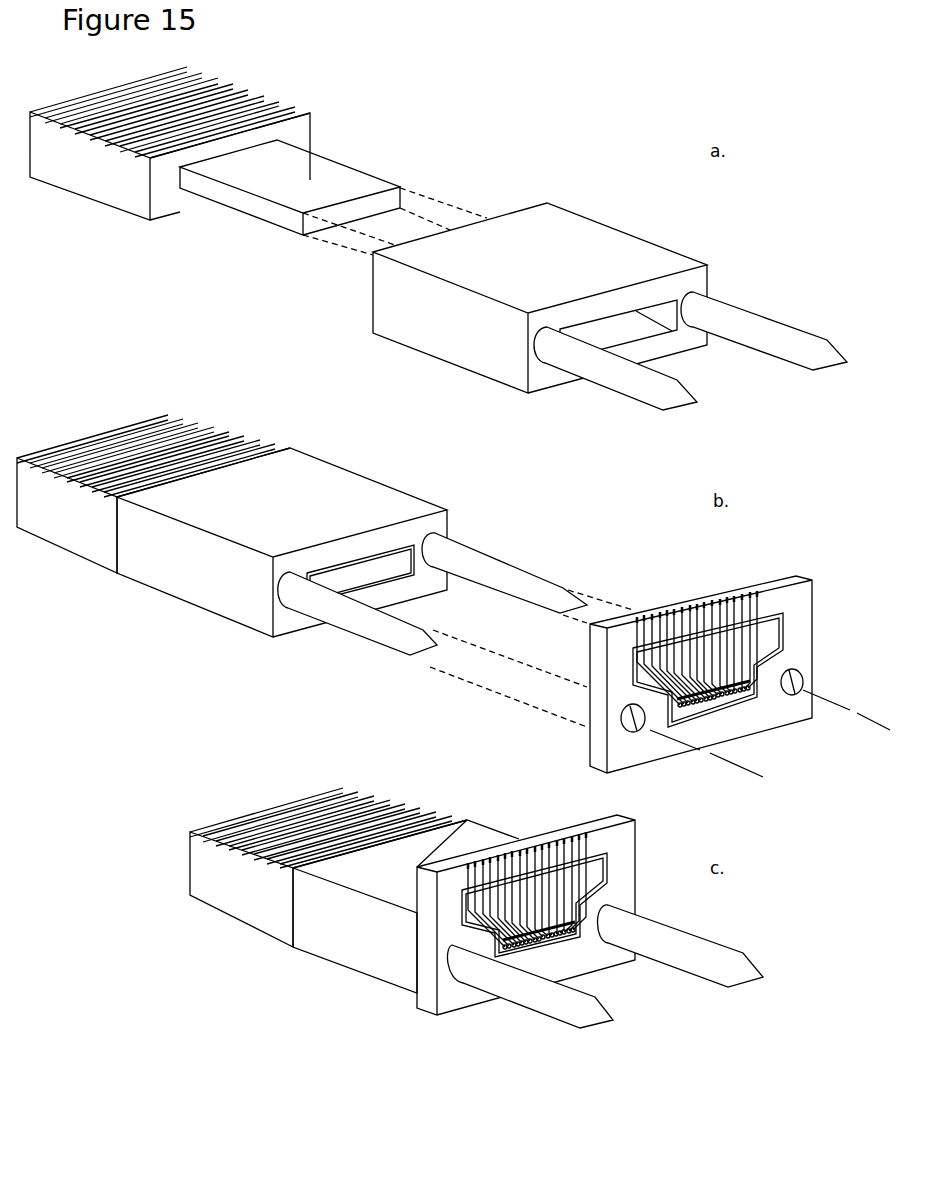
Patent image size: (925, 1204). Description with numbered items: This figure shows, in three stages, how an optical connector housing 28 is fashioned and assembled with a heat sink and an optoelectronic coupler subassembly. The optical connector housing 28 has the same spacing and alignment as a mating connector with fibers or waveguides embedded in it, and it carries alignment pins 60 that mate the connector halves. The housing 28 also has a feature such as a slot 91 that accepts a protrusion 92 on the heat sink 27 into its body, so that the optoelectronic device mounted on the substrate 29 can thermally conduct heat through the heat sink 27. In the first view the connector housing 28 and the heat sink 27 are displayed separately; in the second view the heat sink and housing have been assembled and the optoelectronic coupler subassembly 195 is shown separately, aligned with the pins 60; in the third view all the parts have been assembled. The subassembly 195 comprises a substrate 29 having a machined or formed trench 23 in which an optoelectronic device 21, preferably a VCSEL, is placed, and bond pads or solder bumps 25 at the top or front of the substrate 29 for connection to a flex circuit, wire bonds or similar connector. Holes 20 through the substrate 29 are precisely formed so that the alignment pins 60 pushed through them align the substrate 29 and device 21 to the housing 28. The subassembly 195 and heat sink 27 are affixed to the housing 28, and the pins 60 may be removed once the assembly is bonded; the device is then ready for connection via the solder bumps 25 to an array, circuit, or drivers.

The heat sink 27 is at (307, 111).
The protrusion 92 is at (353, 167).
The optical connector housing 28 is at (618, 232).
The slot 91 is at (664, 316).
The alignment pins 60 is at (527, 586).
The optoelectronic coupler subassembly 195 is at (620, 786).
The substrate 29 is at (813, 660).
The trench 23 is at (767, 637).
The solder bumps 25 is at (712, 597).
The optoelectronic device 21 is at (757, 700).
The holes 20 is at (803, 678).